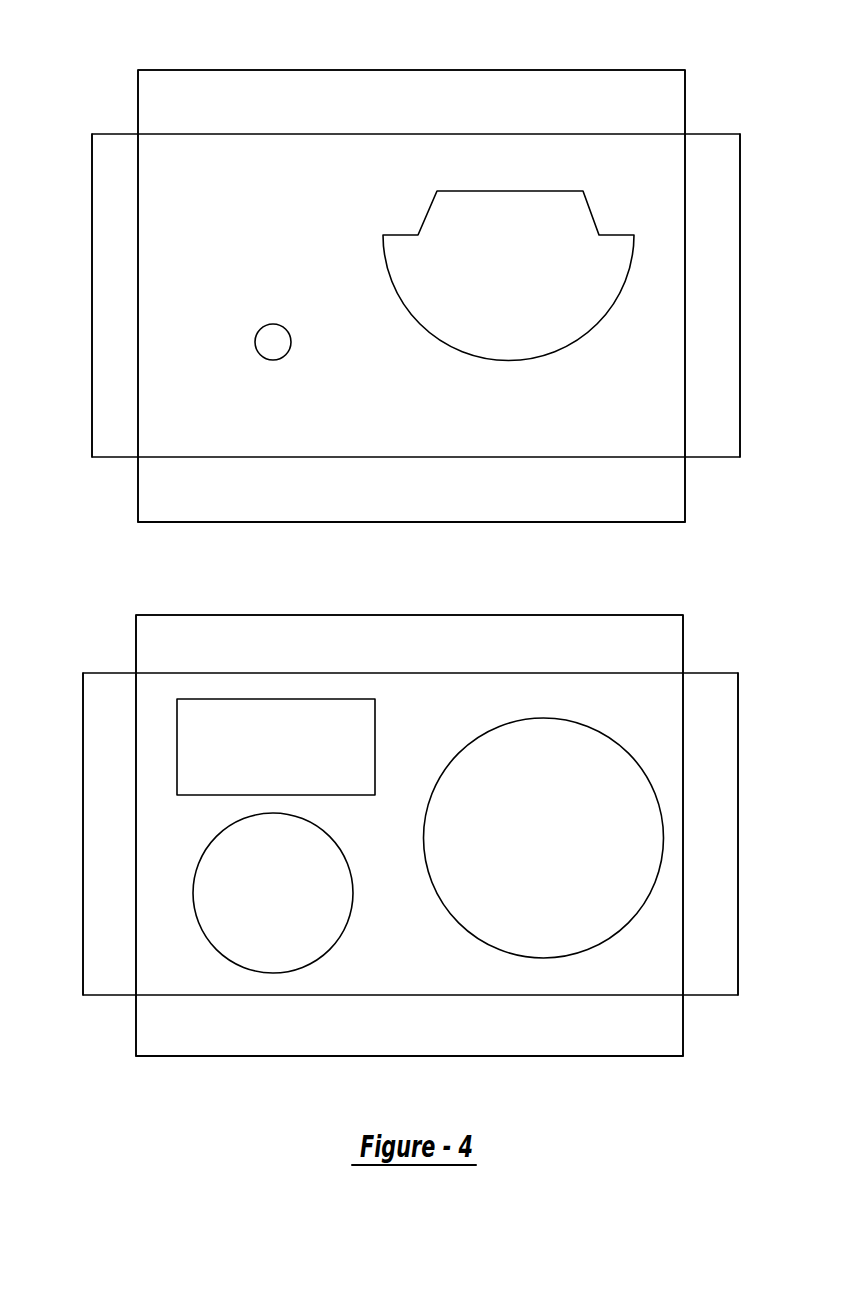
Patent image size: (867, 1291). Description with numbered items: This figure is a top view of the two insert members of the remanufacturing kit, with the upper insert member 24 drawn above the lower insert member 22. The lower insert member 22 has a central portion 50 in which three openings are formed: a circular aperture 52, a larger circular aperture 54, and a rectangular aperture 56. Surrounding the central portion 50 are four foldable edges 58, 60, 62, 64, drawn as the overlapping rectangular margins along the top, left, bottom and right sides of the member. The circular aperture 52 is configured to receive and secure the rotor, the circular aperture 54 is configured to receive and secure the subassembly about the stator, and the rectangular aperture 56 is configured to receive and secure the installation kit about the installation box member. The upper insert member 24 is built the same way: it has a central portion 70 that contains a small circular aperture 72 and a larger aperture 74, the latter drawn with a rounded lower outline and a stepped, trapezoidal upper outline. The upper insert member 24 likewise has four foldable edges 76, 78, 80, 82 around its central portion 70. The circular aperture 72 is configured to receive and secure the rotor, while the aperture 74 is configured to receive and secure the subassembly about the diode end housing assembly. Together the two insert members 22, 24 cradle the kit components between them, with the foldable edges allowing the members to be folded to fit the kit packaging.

The lower insert member 22 is at (650, 698).
The upper insert member 24 is at (667, 155).
The central portion 50 is at (653, 980).
The circular aperture 52 is at (245, 932).
The circular aperture 54 is at (617, 832).
The rectangular aperture 56 is at (205, 752).
The foldable edge 58 is at (506, 640).
The foldable edge 60 is at (97, 932).
The foldable edge 62 is at (590, 1044).
The foldable edge 64 is at (720, 897).
The central portion 70 is at (648, 367).
The circular aperture 72 is at (275, 343).
The aperture 74 is at (610, 258).
The foldable edge 76 is at (436, 88).
The foldable edge 78 is at (106, 337).
The foldable edge 80 is at (662, 500).
The foldable edge 82 is at (723, 423).